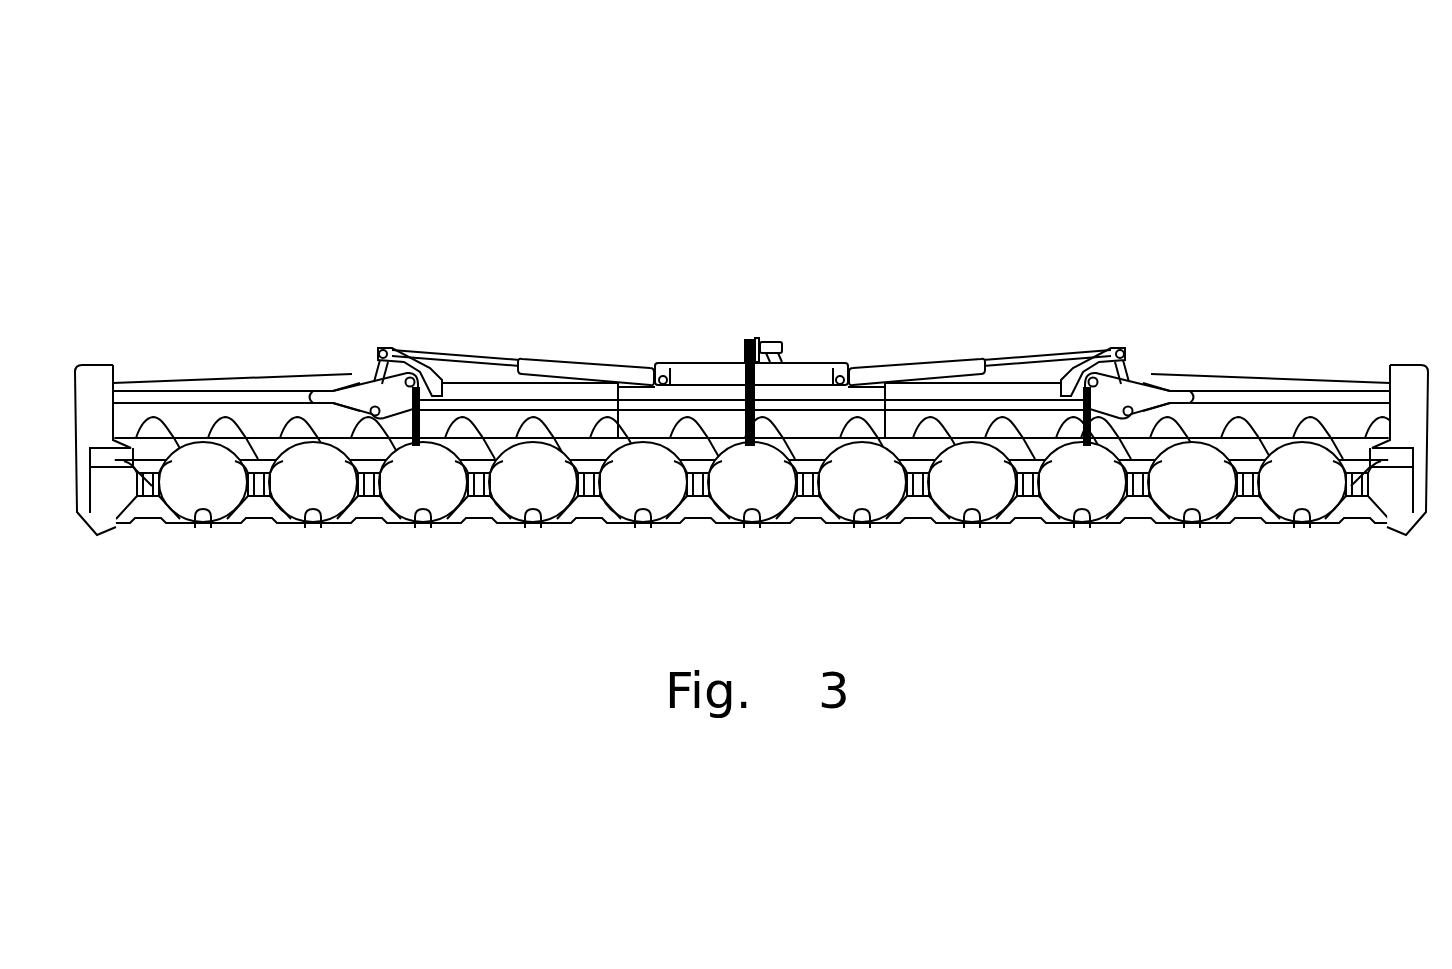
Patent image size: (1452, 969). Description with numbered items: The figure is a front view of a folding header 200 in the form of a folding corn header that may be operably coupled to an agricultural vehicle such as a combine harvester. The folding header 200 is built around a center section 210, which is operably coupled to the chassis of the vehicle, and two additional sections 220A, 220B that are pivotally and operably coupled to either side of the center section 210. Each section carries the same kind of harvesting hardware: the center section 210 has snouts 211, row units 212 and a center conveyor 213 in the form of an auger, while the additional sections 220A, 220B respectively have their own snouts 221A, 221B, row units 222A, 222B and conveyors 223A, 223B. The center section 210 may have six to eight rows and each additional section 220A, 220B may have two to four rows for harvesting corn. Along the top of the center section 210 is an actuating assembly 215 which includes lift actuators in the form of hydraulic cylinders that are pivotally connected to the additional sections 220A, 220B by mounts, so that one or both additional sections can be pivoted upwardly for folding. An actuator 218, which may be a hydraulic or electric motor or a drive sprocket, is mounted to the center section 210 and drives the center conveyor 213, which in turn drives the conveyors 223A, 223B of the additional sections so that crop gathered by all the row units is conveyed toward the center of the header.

The folding header 200 is at (1041, 130).
The center section 210 is at (717, 220).
The snouts 211 is at (522, 499).
The row units 212 is at (695, 536).
The center conveyor 213 is at (607, 443).
The actuating assembly 215 is at (920, 328).
The actuator 218 is at (764, 340).
The additional section 220A is at (1267, 266).
The additional section 220B is at (242, 243).
The snouts 221A is at (1313, 499).
The snouts 221B is at (195, 497).
The row units 222A is at (1236, 541).
The row units 222B is at (258, 538).
The conveyor 223A is at (1146, 445).
The conveyor 223B is at (376, 451).